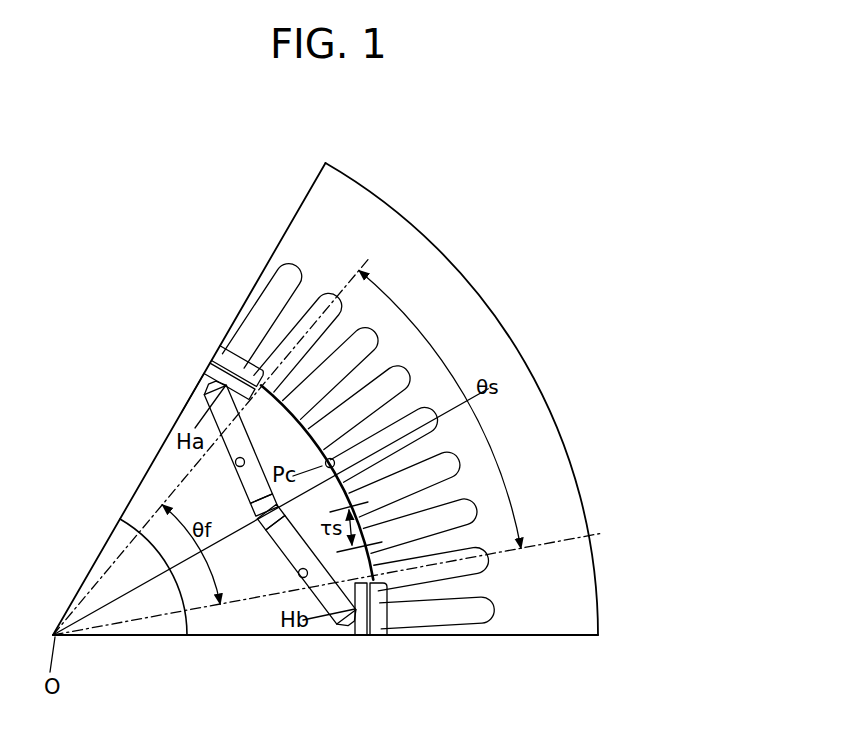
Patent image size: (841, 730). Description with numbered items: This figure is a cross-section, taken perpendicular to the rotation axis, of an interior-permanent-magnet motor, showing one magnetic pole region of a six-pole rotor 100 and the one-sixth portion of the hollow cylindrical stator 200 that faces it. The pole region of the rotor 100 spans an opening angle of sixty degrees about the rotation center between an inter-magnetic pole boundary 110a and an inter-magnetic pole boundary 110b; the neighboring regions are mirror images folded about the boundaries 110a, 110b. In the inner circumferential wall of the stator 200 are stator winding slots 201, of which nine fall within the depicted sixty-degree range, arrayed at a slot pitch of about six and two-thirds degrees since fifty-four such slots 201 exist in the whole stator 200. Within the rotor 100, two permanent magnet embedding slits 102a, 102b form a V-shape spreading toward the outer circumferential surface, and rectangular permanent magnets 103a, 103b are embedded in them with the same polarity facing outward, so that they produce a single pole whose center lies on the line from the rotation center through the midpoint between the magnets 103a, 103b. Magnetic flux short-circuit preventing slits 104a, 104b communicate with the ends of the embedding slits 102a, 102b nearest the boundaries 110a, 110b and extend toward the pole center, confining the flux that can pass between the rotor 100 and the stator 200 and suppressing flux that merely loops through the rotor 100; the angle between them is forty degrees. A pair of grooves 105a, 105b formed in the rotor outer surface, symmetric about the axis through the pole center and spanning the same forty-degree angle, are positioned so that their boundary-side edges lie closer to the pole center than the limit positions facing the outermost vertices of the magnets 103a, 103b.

The rotor 100 is at (268, 678).
The stator 200 is at (536, 678).
The stator winding slots 201 is at (293, 268).
The permanent magnet embedding slit 102a is at (241, 468).
The permanent magnet embedding slit 102b is at (298, 576).
The permanent magnet 103a is at (236, 446).
The permanent magnet 103b is at (295, 548).
The magnetic flux short-circuit preventing slit 104a is at (210, 367).
The magnetic flux short-circuit preventing slit 104b is at (361, 637).
The groove 105a is at (226, 356).
The groove 105b is at (387, 633).
The inter-magnetic pole boundary 110a is at (195, 388).
The inter-magnetic pole boundary 110b is at (310, 637).